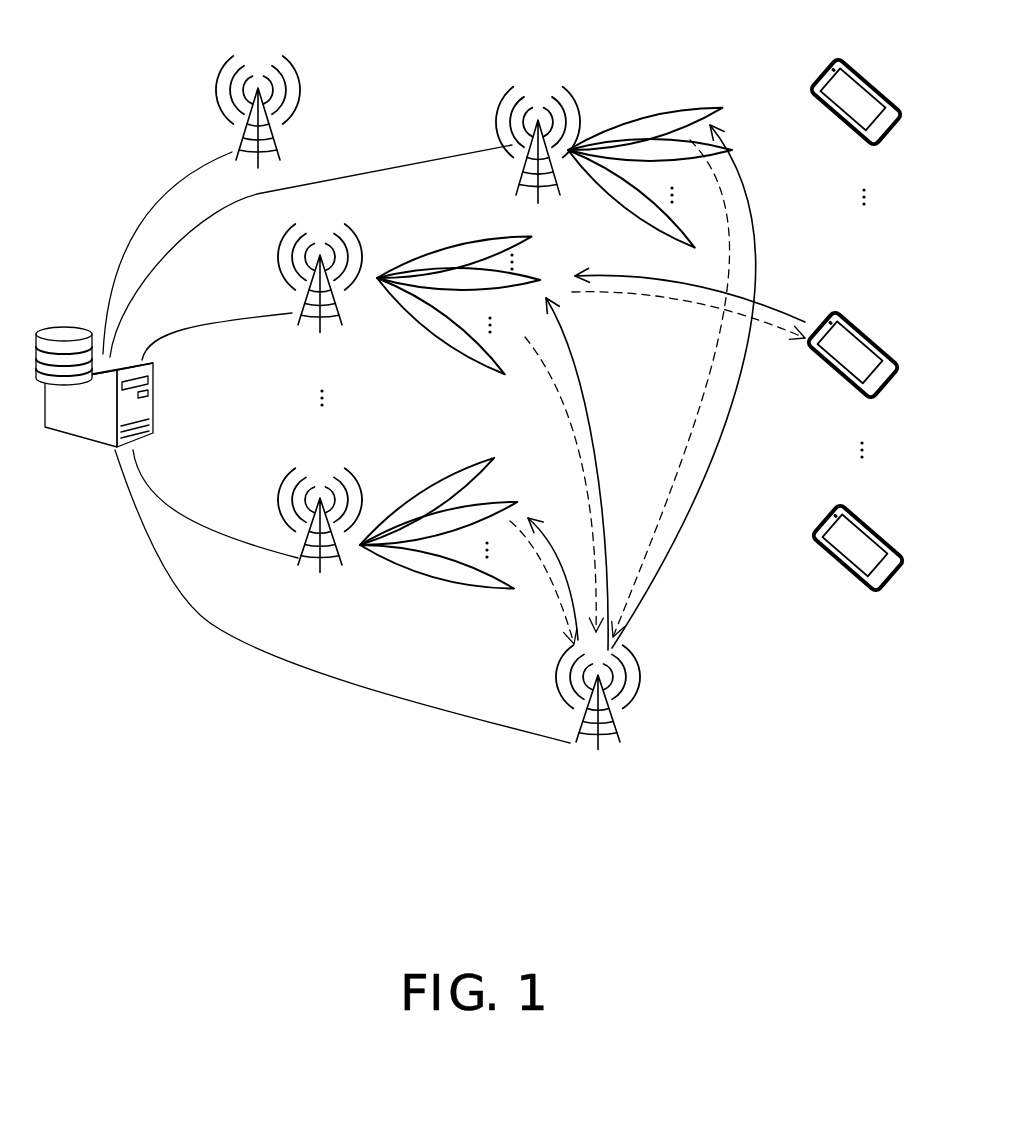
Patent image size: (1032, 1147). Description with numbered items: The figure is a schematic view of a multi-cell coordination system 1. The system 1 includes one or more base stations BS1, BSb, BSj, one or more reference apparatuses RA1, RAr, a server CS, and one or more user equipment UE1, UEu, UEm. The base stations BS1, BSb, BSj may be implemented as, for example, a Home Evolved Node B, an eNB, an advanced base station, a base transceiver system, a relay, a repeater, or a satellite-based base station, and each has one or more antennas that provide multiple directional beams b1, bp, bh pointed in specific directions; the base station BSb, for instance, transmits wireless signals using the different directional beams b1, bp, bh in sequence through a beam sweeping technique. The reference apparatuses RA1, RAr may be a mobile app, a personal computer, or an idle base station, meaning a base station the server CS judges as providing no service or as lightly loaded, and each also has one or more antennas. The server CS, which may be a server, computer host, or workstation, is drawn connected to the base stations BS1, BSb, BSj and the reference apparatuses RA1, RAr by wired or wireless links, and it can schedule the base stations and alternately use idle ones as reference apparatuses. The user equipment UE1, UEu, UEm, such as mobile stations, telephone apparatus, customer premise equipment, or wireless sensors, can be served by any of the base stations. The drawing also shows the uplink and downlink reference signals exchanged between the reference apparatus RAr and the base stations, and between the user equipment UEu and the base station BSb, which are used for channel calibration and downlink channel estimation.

The multi-cell coordination system 1 is at (475, 466).
The server CS is at (100, 448).
The reference apparatus RA1 is at (282, 140).
The reference apparatus RAr is at (622, 738).
The base station BS1 is at (518, 176).
The base station BSb is at (343, 322).
The base station BSj is at (322, 566).
The directional beam b1 is at (551, 179).
The directional beam bp is at (472, 276).
The directional beam bh is at (444, 341).
The user equipment UE1 is at (872, 85).
The user equipment UEu is at (870, 332).
The user equipment UEm is at (840, 560).